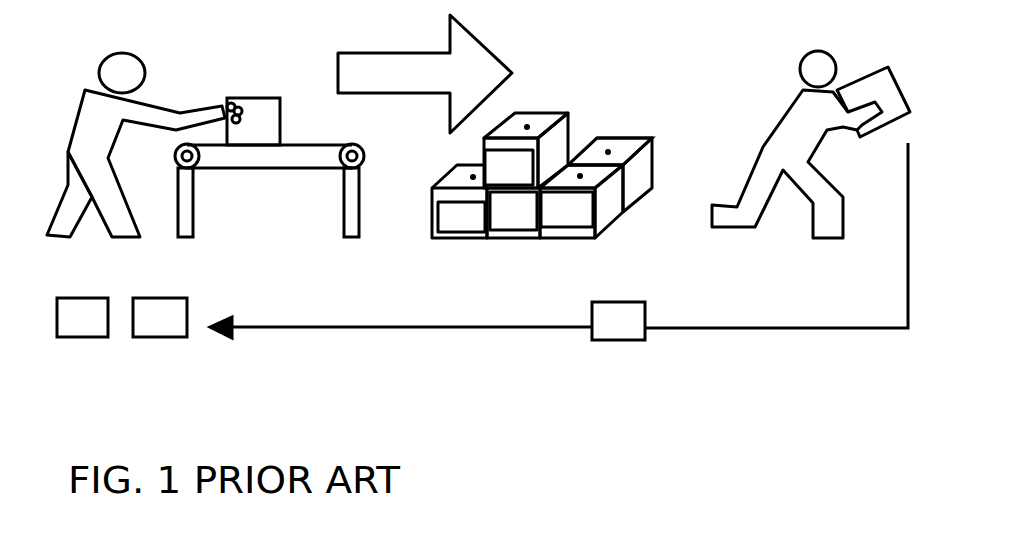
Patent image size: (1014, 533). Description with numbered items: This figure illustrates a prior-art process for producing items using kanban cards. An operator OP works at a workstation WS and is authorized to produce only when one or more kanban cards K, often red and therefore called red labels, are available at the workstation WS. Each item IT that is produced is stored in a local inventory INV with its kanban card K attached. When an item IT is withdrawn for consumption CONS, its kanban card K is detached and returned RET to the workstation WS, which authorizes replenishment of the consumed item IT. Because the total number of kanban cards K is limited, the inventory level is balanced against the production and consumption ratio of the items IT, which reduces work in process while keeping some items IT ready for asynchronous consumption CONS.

The operator OP is at (144, 131).
The workstation WS is at (269, 191).
The local inventory INV is at (542, 199).
The item IT is at (620, 137).
The consumption CONS is at (811, 167).
The return RET is at (559, 257).
The kanban card K is at (122, 318).